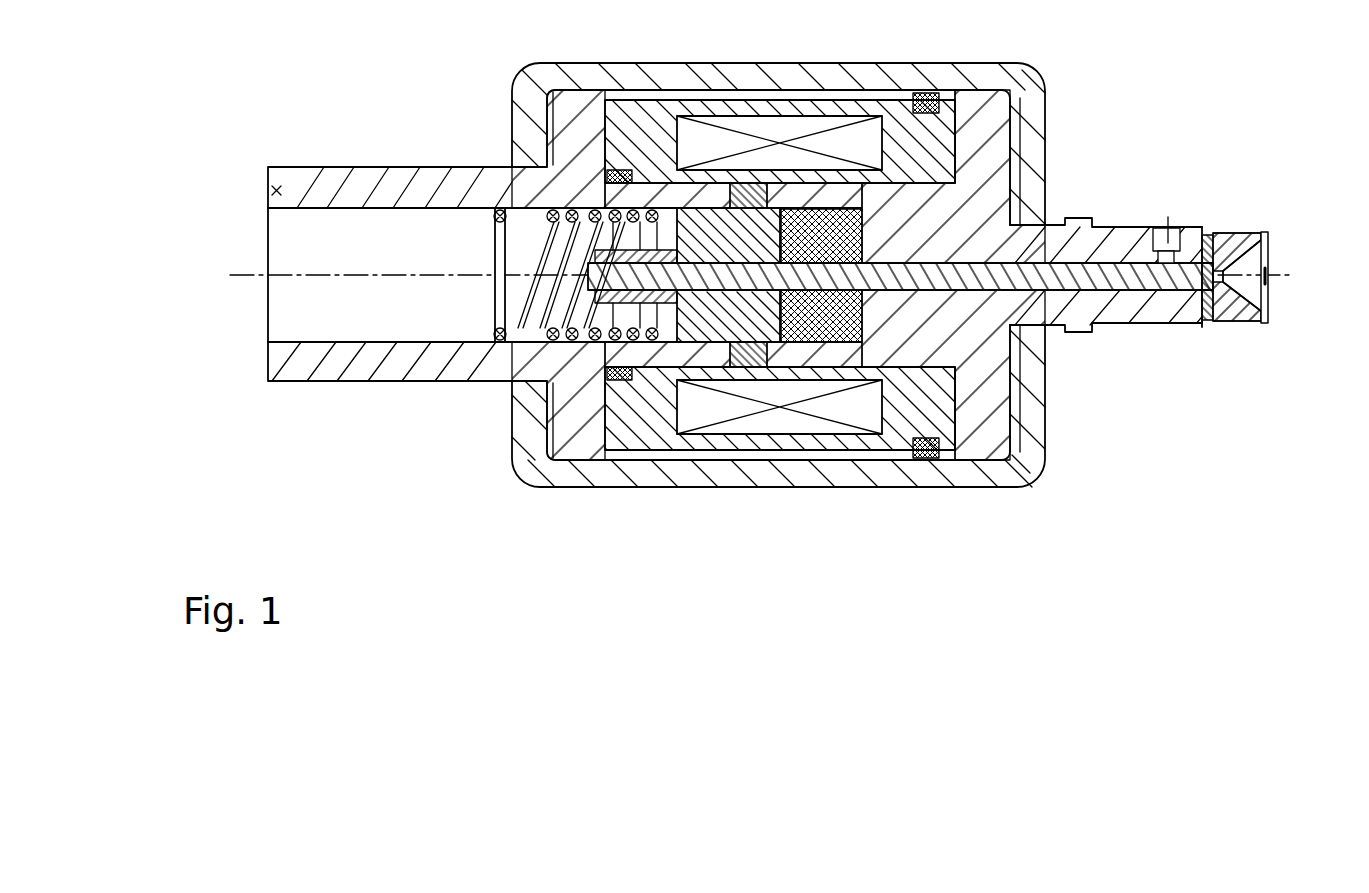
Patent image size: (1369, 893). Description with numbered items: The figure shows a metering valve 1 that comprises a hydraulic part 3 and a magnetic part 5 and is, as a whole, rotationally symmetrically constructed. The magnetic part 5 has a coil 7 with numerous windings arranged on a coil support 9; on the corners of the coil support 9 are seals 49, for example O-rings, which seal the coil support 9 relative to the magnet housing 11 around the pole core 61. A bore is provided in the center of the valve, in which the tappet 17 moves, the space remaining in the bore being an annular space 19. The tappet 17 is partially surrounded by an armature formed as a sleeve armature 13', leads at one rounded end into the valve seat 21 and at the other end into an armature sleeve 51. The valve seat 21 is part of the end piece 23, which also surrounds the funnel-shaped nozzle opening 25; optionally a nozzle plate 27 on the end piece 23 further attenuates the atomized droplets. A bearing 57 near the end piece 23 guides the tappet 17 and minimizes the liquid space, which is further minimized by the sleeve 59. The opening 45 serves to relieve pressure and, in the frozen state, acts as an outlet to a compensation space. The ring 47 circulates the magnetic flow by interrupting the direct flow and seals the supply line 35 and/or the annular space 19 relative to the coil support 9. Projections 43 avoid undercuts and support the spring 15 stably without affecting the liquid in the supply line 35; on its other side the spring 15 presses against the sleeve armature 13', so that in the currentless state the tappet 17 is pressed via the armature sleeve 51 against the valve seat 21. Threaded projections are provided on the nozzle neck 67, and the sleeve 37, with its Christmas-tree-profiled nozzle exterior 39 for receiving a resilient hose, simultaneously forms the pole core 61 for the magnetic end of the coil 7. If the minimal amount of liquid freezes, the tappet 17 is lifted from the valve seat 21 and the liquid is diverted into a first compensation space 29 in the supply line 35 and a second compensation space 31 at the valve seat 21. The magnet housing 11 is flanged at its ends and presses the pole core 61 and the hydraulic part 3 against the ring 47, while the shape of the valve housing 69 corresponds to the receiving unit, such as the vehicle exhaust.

The metering valve 1 is at (500, 472).
The hydraulic part 3 is at (1117, 457).
The magnetic part 5 is at (162, 266).
The coil 7 is at (774, 227).
The coil support 9 is at (908, 60).
The magnet housing 11 is at (778, 246).
The sleeve armature 13' is at (747, 387).
The spring 15 is at (337, 355).
The tappet 17 is at (953, 232).
The annular space 19 is at (900, 363).
The valve seat 21 is at (1237, 348).
The end piece 23 is at (1295, 318).
The nozzle opening 25 is at (1314, 273).
The nozzle plate 27 is at (1316, 302).
The first compensation space 29 is at (342, 275).
The second compensation space 31 is at (1290, 242).
The supply line 35 is at (300, 252).
The sleeve 37 is at (345, 270).
The nozzle exterior 39 is at (345, 159).
The projections 43 is at (520, 263).
The opening 45 is at (1260, 163).
The ring 47 is at (666, 408).
The seals 49 is at (565, 368).
The armature sleeve 51 is at (579, 388).
The bearing 57 is at (1285, 217).
The sleeve 59 is at (762, 186).
The pole core 61 is at (773, 231).
The nozzle neck 67 is at (1117, 376).
The valve housing 69 is at (1115, 134).